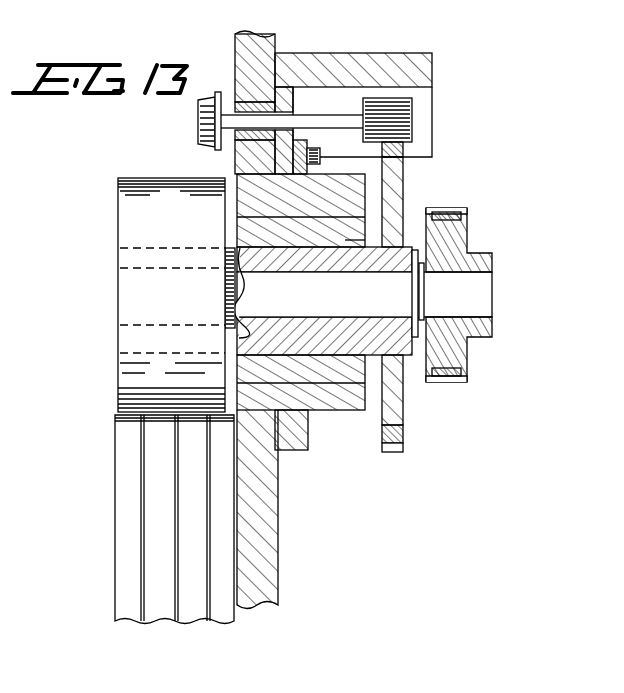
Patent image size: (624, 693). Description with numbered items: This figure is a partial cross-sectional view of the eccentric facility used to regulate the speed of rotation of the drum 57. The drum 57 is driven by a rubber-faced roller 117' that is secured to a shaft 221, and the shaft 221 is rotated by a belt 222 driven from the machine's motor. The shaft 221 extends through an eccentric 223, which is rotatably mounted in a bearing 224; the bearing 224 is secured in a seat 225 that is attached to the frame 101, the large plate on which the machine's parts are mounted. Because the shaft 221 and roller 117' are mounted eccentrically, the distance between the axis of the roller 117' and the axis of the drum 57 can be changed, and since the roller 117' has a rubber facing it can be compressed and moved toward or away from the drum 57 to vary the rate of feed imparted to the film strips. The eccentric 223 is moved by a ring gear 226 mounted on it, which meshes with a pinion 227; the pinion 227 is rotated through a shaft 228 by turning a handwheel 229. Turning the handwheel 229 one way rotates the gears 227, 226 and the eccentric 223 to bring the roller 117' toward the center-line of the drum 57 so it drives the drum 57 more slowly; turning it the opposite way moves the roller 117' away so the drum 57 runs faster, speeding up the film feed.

The drum 57 is at (118, 566).
The frame 101 is at (275, 538).
The rubber-faced roller 117' is at (137, 296).
The shaft 221 is at (120, 272).
The belt 222 is at (440, 212).
The eccentric 223 is at (252, 253).
The bearing 224 is at (308, 377).
The seat 225 is at (290, 450).
The ring gear 226 is at (403, 180).
The pinion 227 is at (413, 118).
The shaft 228 is at (327, 110).
The handwheel 229 is at (197, 119).